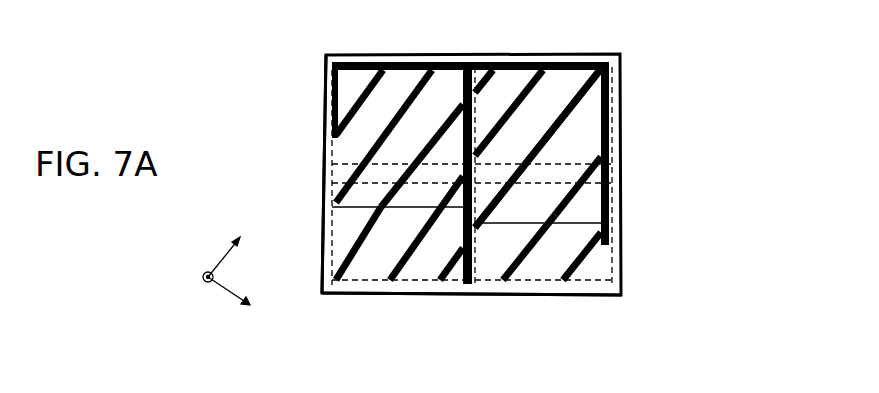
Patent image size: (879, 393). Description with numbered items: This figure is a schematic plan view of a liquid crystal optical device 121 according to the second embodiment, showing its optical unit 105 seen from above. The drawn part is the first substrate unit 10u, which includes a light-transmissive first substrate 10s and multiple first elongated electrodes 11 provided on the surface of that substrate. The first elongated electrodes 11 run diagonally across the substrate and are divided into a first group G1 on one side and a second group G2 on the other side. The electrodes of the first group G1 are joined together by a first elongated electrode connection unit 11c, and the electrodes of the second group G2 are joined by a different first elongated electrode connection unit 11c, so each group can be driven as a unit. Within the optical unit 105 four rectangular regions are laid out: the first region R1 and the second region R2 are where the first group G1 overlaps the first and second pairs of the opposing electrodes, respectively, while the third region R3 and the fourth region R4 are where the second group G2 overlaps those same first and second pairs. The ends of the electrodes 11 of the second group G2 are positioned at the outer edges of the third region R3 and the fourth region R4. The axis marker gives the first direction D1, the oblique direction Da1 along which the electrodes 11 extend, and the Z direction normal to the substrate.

The first elongated electrode 11 is at (568, 117).
The first elongated electrode connection unit 11c is at (353, 62).
The first region R1 is at (414, 64).
The second region R2 is at (358, 292).
The third region R3 is at (572, 62).
The fourth region R4 is at (519, 292).
The first group G1 is at (378, 207).
The second group G2 is at (565, 223).
The first substrate 10s is at (326, 99).
The first substrate unit 10u is at (575, 292).
The liquid crystal optical device 121 is at (724, 98).
The optical unit 105 is at (713, 142).
The first direction D1 is at (217, 249).
The first diagonal direction Da1 is at (252, 303).
The Z direction Z is at (203, 293).